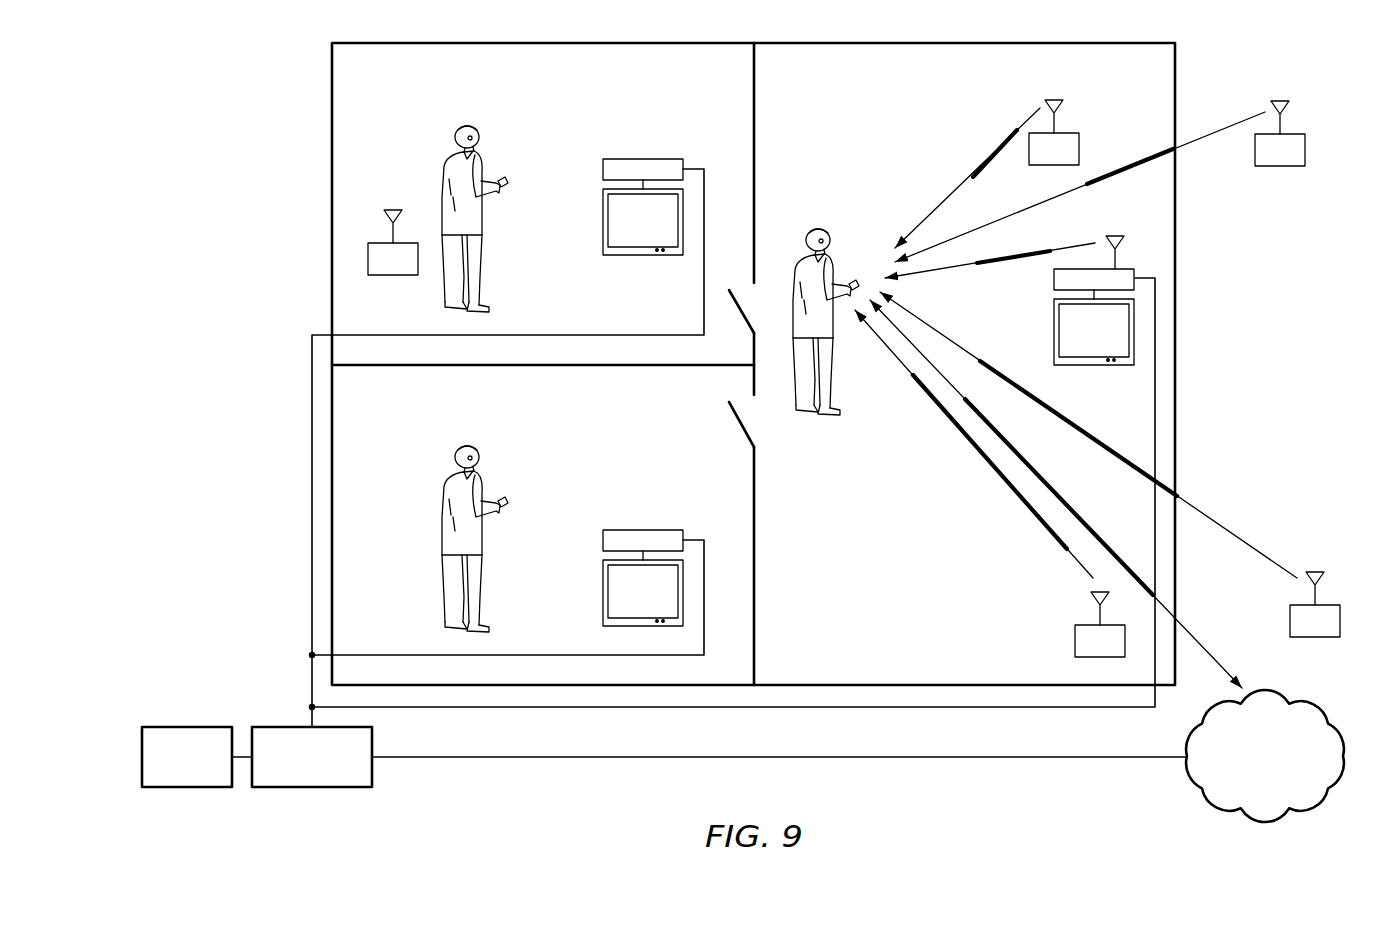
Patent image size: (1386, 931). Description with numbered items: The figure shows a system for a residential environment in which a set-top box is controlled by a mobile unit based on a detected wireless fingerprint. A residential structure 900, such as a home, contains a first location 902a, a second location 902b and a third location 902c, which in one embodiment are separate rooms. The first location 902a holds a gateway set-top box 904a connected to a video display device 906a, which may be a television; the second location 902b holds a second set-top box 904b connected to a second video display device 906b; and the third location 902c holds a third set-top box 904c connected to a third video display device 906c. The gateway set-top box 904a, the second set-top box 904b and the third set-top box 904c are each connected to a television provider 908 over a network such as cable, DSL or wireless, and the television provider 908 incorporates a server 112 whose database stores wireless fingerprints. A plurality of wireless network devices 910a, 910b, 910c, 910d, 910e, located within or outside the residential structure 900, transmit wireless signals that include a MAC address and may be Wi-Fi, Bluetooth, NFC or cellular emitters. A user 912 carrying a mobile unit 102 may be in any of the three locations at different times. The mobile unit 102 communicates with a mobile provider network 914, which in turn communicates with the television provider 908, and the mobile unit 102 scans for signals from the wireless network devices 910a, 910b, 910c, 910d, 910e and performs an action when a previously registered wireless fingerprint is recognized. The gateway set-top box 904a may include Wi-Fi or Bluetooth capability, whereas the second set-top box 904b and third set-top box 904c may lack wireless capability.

The residential structure 900 is at (330, 103).
The first location 902a is at (987, 92).
The second location 902b is at (567, 92).
The third location 902c is at (567, 415).
The gateway set-top box 904a is at (1054, 278).
The second set-top box 904b is at (640, 158).
The third set-top box 904c is at (640, 530).
The video display device 906a is at (1100, 366).
The second video display device 906b is at (603, 210).
The third video display device 906c is at (603, 588).
The television provider 908 is at (302, 788).
The wireless network device 910a is at (1080, 152).
The wireless network device 910b is at (1283, 164).
The wireless network device 910c is at (1316, 637).
The wireless network device 910d is at (1075, 642).
The wireless network device 910e is at (378, 277).
The user 912 is at (456, 132).
The mobile unit 102 is at (500, 186).
The server 112 is at (180, 788).
The mobile provider network 914 is at (1300, 816).